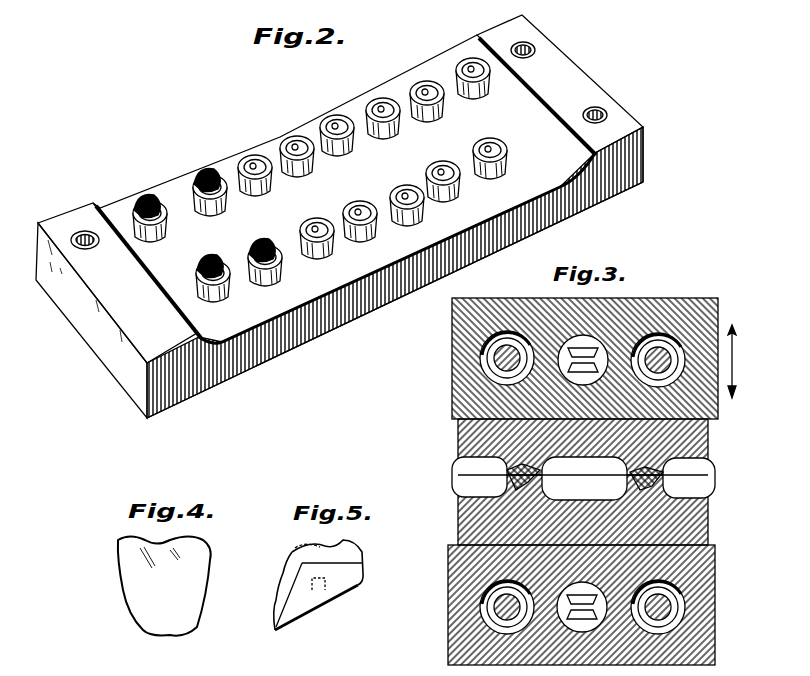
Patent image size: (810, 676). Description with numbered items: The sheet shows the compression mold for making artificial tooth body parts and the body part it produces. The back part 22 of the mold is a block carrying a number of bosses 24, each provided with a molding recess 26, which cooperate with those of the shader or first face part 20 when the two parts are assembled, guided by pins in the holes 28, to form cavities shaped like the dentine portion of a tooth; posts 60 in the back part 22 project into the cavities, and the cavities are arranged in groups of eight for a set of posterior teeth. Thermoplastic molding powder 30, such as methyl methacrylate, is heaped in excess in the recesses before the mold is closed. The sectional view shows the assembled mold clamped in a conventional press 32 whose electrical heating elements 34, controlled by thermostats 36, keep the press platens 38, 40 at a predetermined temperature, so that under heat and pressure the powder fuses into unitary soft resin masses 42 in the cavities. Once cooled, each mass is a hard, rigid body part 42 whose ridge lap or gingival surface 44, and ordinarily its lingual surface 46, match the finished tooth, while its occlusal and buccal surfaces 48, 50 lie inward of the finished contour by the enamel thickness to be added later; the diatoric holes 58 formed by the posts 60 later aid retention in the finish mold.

In FIG. 3, the shader or first face part 20 is at (465, 433).
In FIG. 2, the back part 22 is at (583, 200).
In FIG. 3, the back part 22 is at (465, 520).
In FIG. 2, the bosses 24 is at (288, 280).
In FIG. 2, the molding recesses 26 is at (497, 147).
In FIG. 2, the holes 28 is at (77, 232).
In FIG. 2, the thermoplastic molding powder 30 is at (207, 172).
In FIG. 3, the press 32 is at (564, 459).
In FIG. 3, the electrical heating elements 34 is at (488, 347).
In FIG. 3, the thermostats 36 is at (589, 351).
In FIG. 3, the press platen 38 is at (563, 336).
In FIG. 3, the press platen 40 is at (488, 597).
In FIG. 3, the soft resin masses / body part 42 is at (510, 472).
In FIG. 4, the soft resin masses / body part 42 is at (142, 580).
In FIG. 5, the soft resin masses / body part 42 is at (318, 590).
In FIG. 5, the ridge lap or gingival surface 44 is at (297, 620).
In FIG. 5, the lingual surface 46 is at (360, 553).
In FIG. 5, the occlusal surface 48 is at (303, 543).
In FIG. 5, the buccal surface 50 is at (277, 590).
In FIG. 5, the diatoric holes 58 is at (320, 590).
In FIG. 2, the posts 60 is at (403, 215).